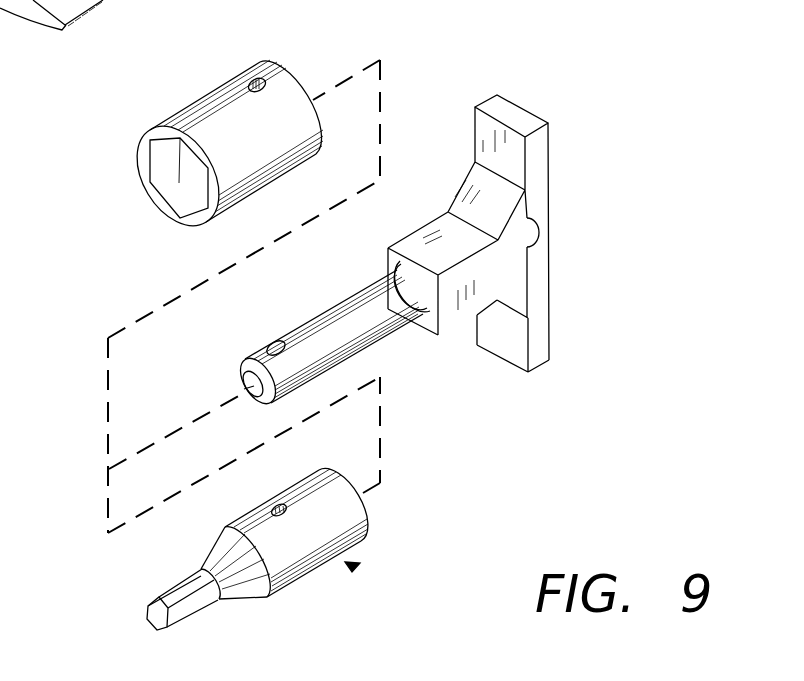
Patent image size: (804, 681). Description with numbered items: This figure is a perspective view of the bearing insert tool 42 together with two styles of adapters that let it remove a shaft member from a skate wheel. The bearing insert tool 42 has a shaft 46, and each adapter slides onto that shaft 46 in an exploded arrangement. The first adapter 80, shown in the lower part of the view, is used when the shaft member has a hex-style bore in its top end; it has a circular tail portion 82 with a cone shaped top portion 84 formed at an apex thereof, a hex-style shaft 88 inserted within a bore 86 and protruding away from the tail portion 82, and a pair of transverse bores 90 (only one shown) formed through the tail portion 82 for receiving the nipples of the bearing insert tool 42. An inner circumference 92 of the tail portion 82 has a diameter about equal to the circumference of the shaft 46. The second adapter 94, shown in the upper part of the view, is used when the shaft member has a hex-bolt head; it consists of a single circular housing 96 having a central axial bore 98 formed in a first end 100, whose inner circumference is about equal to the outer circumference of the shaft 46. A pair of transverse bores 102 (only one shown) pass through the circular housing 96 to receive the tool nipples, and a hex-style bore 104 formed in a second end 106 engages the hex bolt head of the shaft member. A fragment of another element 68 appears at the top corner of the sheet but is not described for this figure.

The bearing insert tool 42 is at (533, 200).
The shaft 46 is at (354, 322).
The ring member 68 is at (133, 0).
The first adapter 80 is at (350, 565).
The circular tail portion 82 is at (362, 532).
The cone shaped top portion 84 is at (227, 557).
The bore 86 is at (220, 597).
The hex-style shaft 88 is at (149, 600).
The transverse bores 90 is at (278, 506).
The inner circumference 92 is at (363, 496).
The second adapter 94 is at (278, 92).
The circular housing 96 is at (233, 117).
The central axial bore 98 is at (311, 97).
The first end 100 is at (318, 128).
The transverse bores 102 is at (257, 80).
The hex-style bore 104 is at (177, 186).
The second end 106 is at (197, 227).